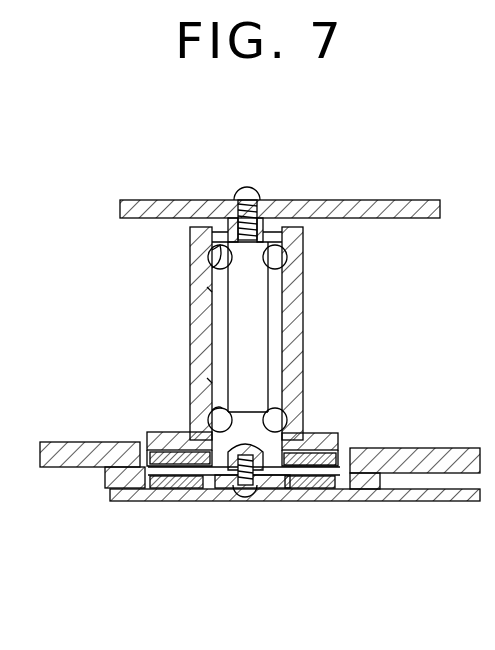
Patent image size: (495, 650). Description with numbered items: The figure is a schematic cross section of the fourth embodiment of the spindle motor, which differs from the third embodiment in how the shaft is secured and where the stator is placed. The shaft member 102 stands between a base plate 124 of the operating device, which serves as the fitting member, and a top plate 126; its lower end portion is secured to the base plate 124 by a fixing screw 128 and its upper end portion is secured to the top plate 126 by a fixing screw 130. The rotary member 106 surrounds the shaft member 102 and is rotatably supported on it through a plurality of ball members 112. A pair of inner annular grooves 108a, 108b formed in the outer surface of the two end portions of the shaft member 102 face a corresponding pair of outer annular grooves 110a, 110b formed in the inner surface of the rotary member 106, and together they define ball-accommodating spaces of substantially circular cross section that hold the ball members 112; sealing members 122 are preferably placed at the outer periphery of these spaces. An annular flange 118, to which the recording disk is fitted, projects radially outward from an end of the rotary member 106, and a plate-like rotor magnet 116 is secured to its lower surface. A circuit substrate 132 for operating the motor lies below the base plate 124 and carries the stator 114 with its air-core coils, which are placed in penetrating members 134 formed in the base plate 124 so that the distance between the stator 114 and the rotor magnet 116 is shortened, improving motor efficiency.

The shaft member 102 is at (228, 332).
The rotary member 106 is at (305, 318).
The inner annular groove 108a is at (207, 380).
The inner annular groove 108b is at (207, 292).
The outer annular groove 110a is at (210, 410).
The outer annular groove 110b is at (212, 250).
The ball members 112 is at (275, 257).
The stator 114 is at (300, 502).
The rotor magnet 116 is at (167, 440).
The flange 118 is at (325, 440).
The sealing members 122 is at (270, 225).
The base plate 124 is at (430, 448).
The top plate 126 is at (398, 200).
The fixing screw 128 is at (208, 498).
The fixing screw 130 is at (237, 205).
The circuit substrate 132 is at (441, 503).
The penetrating members 134 is at (148, 498).